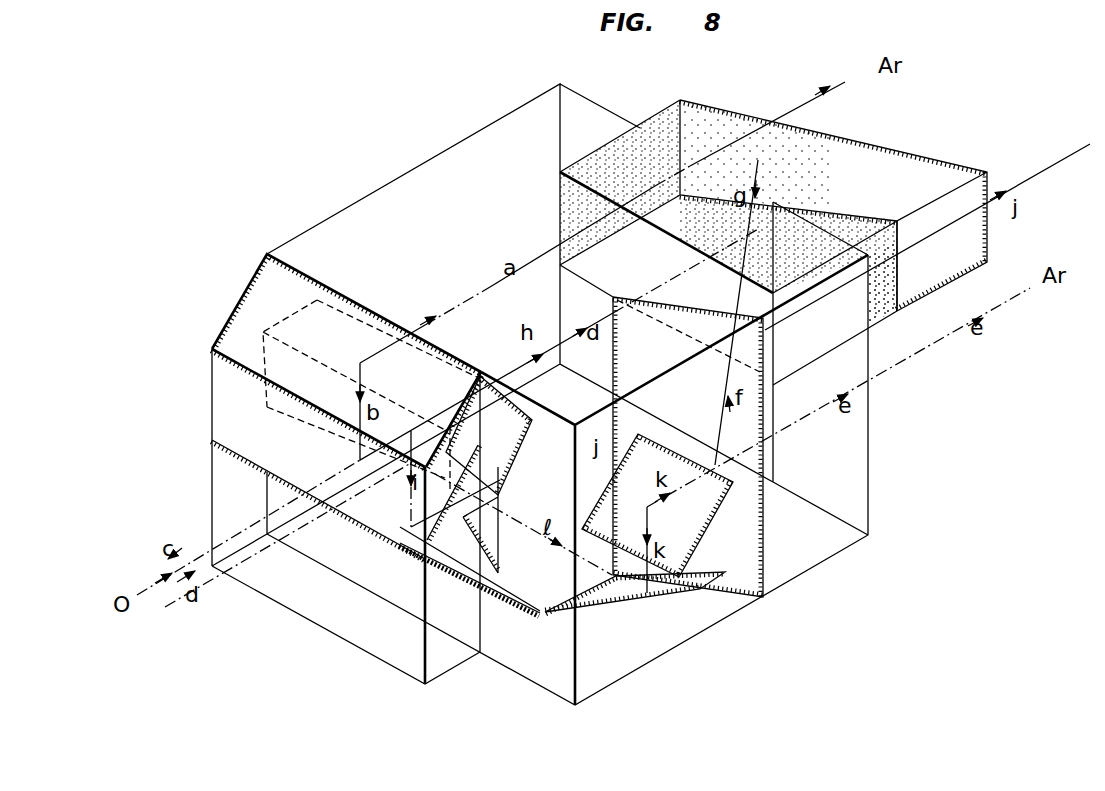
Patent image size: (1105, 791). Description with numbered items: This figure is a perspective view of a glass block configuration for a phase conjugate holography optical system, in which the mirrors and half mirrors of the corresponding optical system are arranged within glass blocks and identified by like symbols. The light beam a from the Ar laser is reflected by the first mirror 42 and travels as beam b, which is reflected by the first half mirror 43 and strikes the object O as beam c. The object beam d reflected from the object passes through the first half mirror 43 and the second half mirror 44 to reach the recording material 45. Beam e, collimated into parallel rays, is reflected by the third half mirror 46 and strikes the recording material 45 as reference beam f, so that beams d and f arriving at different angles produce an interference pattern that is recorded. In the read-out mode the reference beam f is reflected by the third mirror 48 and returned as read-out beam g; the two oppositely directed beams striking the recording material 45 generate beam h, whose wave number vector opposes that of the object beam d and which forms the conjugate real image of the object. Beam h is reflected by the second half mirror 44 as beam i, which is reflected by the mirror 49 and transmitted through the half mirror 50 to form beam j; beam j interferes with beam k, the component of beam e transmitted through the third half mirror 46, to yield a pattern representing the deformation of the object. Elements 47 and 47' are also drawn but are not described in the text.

The first mirror 42 is at (262, 300).
The first half mirror 43 is at (237, 410).
The second half mirror 44 is at (510, 434).
The recording material 45 is at (885, 315).
The third half mirror 46 is at (755, 555).
The lower reflecting plate 47 is at (648, 619).
The inclined reflecting plate 47' is at (701, 537).
The third mirror 48 is at (881, 170).
The mirror 49 is at (492, 593).
The half mirror 50 is at (497, 546).